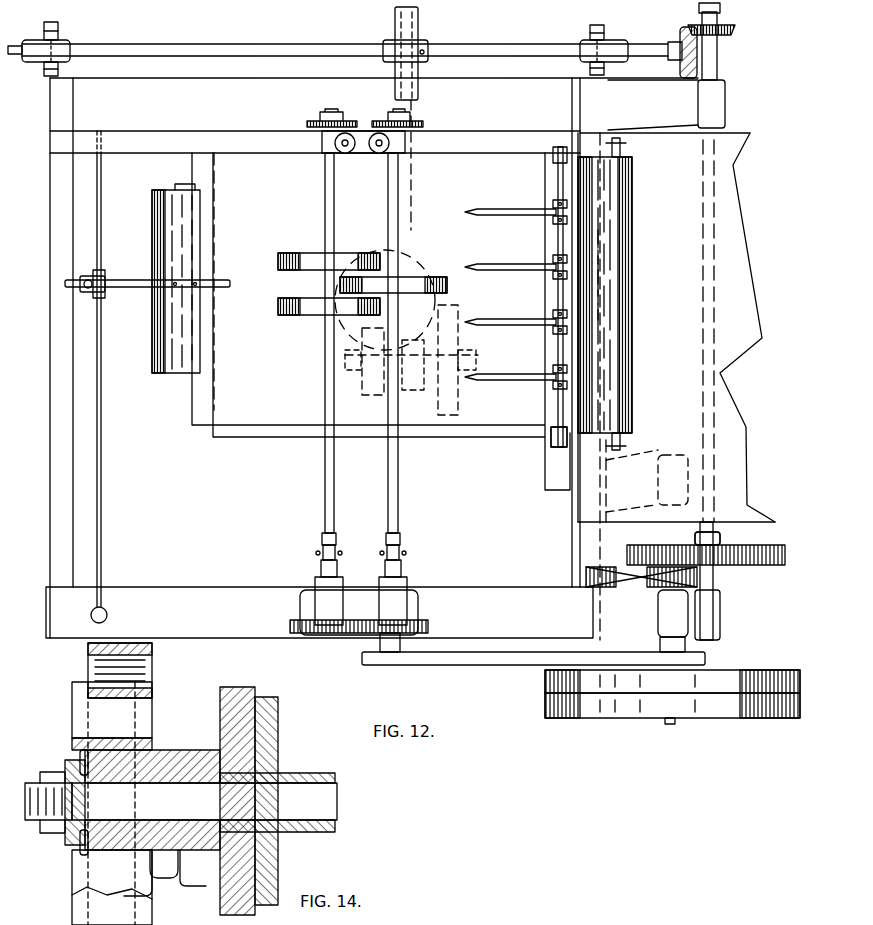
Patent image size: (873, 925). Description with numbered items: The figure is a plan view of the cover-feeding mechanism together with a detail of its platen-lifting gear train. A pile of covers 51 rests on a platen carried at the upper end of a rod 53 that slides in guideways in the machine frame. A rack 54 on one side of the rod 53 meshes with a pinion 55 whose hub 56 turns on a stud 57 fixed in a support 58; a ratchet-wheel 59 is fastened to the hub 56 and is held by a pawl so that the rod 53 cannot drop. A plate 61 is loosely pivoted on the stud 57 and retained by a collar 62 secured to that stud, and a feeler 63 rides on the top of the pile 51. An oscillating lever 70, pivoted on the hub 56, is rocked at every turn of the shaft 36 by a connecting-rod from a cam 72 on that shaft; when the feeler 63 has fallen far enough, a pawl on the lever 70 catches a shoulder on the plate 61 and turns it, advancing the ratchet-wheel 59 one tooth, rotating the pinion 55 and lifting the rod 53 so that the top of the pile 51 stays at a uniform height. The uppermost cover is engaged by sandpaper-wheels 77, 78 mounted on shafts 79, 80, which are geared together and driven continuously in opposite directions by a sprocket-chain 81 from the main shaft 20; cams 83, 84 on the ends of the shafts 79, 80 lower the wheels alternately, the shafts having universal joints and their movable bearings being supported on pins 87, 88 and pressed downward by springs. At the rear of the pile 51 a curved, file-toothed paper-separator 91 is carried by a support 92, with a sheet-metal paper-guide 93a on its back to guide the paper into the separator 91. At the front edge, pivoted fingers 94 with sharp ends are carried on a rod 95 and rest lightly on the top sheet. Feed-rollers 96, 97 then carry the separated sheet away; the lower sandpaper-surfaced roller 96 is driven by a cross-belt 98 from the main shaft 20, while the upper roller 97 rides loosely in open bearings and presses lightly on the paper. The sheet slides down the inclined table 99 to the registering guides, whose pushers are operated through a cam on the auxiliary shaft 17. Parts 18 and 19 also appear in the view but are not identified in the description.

In FIG. 12, the auxiliary shaft 17 is at (698, 401).
In FIG. 12, the gear 18 is at (752, 572).
In FIG. 12, the hub 19 is at (640, 546).
In FIG. 12, the main shaft 20 is at (672, 724).
In FIG. 12, the shaft 36 is at (510, 44).
In FIG. 12, the pile of covers 51 is at (381, 321).
In FIG. 14, the rod 53 is at (152, 656).
In FIG. 14, the rack 54 is at (92, 664).
In FIG. 14, the pinion 55 is at (150, 873).
In FIG. 14, the hub 56 is at (185, 860).
In FIG. 14, the stud 57 is at (337, 802).
In FIG. 14, the support 58 is at (70, 766).
In FIG. 14, the ratchet-wheel 59 is at (205, 884).
In FIG. 14, the plate 61 is at (278, 876).
In FIG. 14, the collar 62 is at (333, 778).
In FIG. 12, the feeler 63 is at (529, 296).
In FIG. 14, the oscillating lever 70 is at (200, 758).
In FIG. 12, the cam 72 is at (418, 22).
In FIG. 12, the sandpaper-wheel 77 is at (447, 288).
In FIG. 12, the sandpaper-wheel 78 is at (278, 302).
In FIG. 12, the shaft 79 is at (404, 491).
In FIG. 12, the shaft 80 is at (340, 493).
In FIG. 12, the sprocket-chain 81 is at (478, 667).
In FIG. 12, the cam 83 is at (326, 118).
In FIG. 12, the cam 84 is at (392, 118).
In FIG. 12, the pin 87 is at (345, 153).
In FIG. 12, the pin 88 is at (378, 153).
In FIG. 12, the paper-separator 91 is at (222, 280).
In FIG. 12, the support 92 is at (118, 284).
In FIG. 12, the paper-guide 93a is at (160, 204).
In FIG. 12, the fingers 94 is at (500, 212).
In FIG. 12, the rod 95 is at (556, 436).
In FIG. 12, the feed-roller 96 is at (585, 282).
In FIG. 12, the feed-roller 97 is at (622, 222).
In FIG. 12, the cross-belt 98 is at (632, 592).
In FIG. 12, the inclined table 99 is at (752, 352).